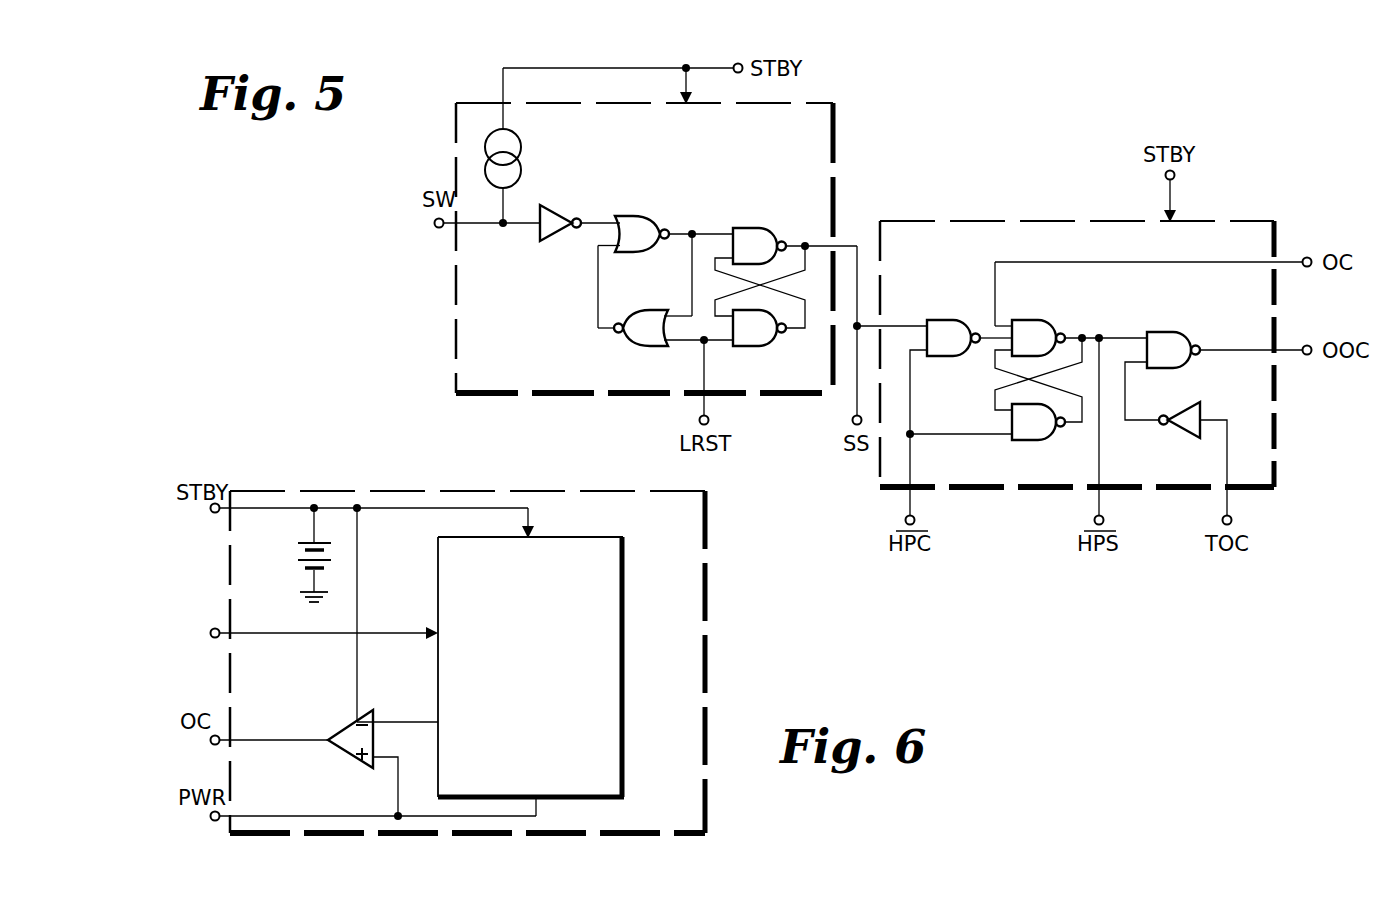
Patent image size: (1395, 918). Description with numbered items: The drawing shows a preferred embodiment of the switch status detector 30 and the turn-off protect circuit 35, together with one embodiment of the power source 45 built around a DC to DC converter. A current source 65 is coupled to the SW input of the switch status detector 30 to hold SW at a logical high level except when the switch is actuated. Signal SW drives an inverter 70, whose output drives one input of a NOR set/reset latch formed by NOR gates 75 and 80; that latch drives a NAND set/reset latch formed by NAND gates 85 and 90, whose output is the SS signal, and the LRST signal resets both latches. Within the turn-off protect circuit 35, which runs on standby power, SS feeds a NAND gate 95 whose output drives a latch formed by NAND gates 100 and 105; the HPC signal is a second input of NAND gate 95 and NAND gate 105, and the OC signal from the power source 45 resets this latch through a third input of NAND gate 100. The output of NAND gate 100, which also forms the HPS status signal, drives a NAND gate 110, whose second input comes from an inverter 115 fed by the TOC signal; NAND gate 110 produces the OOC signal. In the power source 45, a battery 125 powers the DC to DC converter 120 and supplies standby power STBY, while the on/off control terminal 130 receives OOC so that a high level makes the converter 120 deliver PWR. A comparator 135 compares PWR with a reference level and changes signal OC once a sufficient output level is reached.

In FIG. 5, the switch status detector 30 is at (826, 103).
In FIG. 5, the turn-off protect circuit 35 is at (1258, 221).
In FIG. 6, the power source 45 is at (708, 668).
In FIG. 5, the current source 65 is at (521, 146).
In FIG. 5, the inverter 70 is at (549, 236).
In FIG. 5, the NOR gate 75 is at (636, 217).
In FIG. 5, the NOR gate 80 is at (657, 311).
In FIG. 5, the NAND gate 85 is at (750, 228).
In FIG. 5, the NAND gate 90 is at (748, 346).
In FIG. 5, the NAND gate 95 is at (948, 320).
In FIG. 5, the NAND gate 100 is at (1032, 320).
In FIG. 5, the NAND gate 105 is at (1030, 440).
In FIG. 5, the NAND gate 110 is at (1172, 332).
In FIG. 5, the inverter 115 is at (1190, 438).
In FIG. 6, the DC to DC converter 120 is at (627, 573).
In FIG. 6, the battery 125 is at (297, 560).
In FIG. 6, the on/off control terminal 130 is at (432, 630).
In FIG. 6, the comparator 135 is at (345, 752).